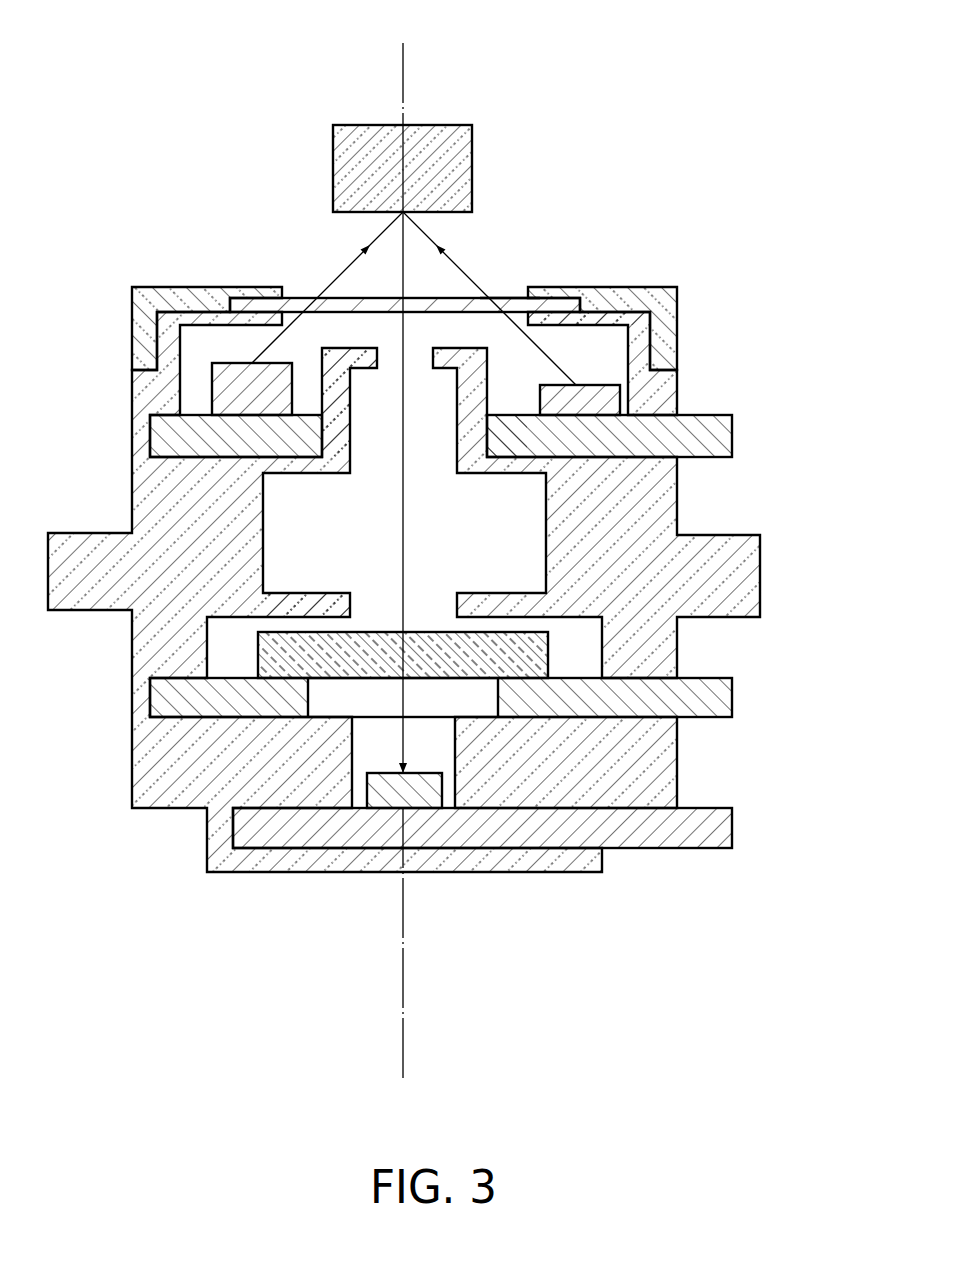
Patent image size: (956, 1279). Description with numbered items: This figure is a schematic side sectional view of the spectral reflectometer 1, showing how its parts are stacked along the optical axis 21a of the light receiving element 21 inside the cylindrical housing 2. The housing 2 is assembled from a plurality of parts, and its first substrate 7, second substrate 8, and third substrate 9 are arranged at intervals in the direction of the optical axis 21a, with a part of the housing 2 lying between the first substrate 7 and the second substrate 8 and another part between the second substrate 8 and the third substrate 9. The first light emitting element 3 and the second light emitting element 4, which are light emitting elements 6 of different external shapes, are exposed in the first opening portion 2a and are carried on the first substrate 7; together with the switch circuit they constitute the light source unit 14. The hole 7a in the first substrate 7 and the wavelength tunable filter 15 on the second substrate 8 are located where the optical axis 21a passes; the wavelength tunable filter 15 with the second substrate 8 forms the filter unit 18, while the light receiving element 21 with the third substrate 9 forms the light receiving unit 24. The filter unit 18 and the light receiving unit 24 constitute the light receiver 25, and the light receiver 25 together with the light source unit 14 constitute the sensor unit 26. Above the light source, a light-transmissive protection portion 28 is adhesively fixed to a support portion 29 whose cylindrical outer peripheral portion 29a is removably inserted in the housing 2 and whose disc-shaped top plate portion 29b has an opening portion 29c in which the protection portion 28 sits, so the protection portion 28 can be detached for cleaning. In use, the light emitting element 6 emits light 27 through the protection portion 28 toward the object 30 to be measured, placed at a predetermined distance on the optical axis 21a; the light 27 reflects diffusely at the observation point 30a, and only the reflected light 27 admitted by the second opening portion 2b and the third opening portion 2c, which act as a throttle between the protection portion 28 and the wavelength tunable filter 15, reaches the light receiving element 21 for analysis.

The spectral reflectometer 1 is at (730, 72).
The housing 2 is at (760, 575).
The first opening portion 2a is at (520, 318).
The second opening portion 2b is at (387, 362).
The third opening portion 2c is at (352, 603).
The first light emitting element 3 is at (607, 394).
The second light emitting element 4 is at (225, 400).
The light emitting element 6 is at (401, 391).
The first substrate 7 is at (481, 471).
The hole 7a is at (487, 437).
The second substrate 8 is at (485, 712).
The third substrate 9 is at (526, 841).
The light source unit 14 is at (728, 430).
The wavelength tunable filter 15 is at (440, 662).
The filter unit 18 is at (720, 697).
The light receiving element 21 is at (383, 776).
The optical axis 21a is at (410, 927).
The light receiving unit 24 is at (720, 822).
The light receiver 25 is at (485, 776).
The sensor unit 26 is at (485, 644).
The light 27 is at (461, 262).
The protection portion 28 is at (305, 297).
The support portion 29 is at (456, 312).
The outer peripheral portion 29a is at (677, 313).
The top plate portion 29b is at (605, 296).
The opening portion 29c is at (508, 297).
The object to be measured 30 is at (333, 183).
The observation point 30a is at (400, 232).